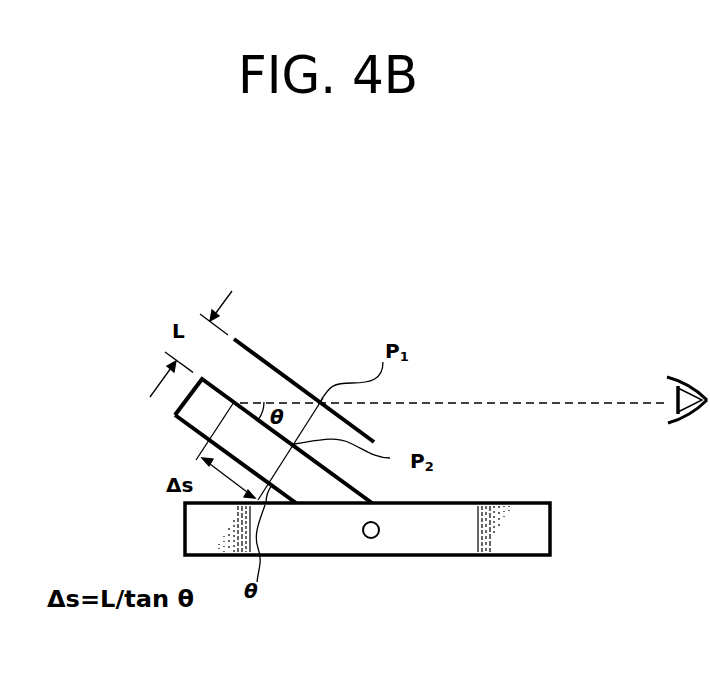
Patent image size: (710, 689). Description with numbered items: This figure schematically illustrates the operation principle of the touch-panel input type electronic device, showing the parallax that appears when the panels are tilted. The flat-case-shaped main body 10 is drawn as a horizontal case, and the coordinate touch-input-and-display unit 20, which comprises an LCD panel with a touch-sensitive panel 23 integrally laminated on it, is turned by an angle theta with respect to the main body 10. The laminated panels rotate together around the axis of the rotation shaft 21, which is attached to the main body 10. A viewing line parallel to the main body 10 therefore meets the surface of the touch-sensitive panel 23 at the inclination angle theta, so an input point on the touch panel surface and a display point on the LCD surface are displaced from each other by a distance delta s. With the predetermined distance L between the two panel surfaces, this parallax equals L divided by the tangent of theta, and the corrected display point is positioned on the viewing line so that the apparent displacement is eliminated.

The main body 10 is at (530, 529).
The coordinate touch-input-and-display unit 20 is at (329, 362).
The rotation shaft 21 is at (367, 537).
The touch-sensitive panel 23 is at (250, 349).